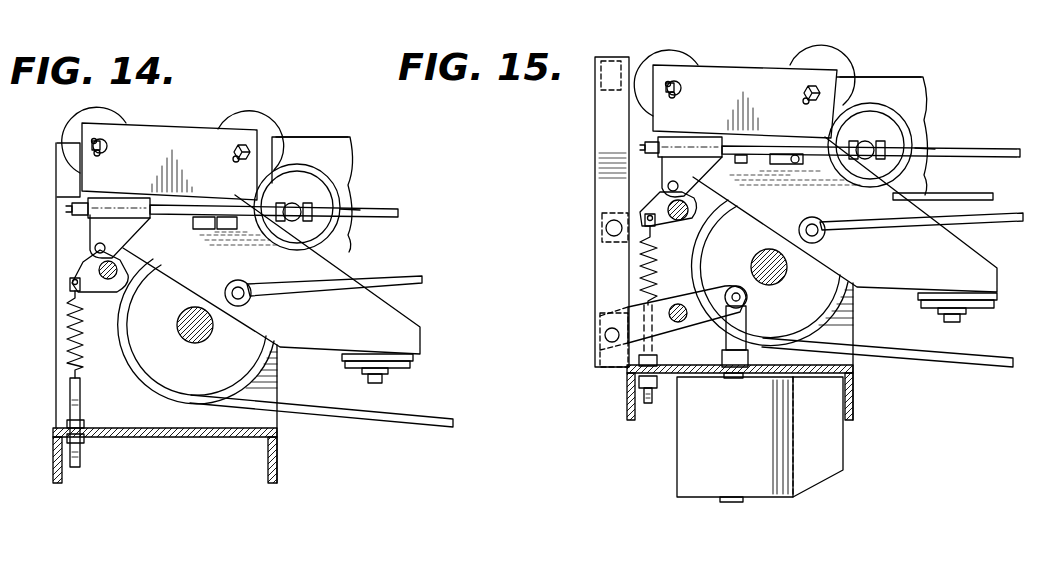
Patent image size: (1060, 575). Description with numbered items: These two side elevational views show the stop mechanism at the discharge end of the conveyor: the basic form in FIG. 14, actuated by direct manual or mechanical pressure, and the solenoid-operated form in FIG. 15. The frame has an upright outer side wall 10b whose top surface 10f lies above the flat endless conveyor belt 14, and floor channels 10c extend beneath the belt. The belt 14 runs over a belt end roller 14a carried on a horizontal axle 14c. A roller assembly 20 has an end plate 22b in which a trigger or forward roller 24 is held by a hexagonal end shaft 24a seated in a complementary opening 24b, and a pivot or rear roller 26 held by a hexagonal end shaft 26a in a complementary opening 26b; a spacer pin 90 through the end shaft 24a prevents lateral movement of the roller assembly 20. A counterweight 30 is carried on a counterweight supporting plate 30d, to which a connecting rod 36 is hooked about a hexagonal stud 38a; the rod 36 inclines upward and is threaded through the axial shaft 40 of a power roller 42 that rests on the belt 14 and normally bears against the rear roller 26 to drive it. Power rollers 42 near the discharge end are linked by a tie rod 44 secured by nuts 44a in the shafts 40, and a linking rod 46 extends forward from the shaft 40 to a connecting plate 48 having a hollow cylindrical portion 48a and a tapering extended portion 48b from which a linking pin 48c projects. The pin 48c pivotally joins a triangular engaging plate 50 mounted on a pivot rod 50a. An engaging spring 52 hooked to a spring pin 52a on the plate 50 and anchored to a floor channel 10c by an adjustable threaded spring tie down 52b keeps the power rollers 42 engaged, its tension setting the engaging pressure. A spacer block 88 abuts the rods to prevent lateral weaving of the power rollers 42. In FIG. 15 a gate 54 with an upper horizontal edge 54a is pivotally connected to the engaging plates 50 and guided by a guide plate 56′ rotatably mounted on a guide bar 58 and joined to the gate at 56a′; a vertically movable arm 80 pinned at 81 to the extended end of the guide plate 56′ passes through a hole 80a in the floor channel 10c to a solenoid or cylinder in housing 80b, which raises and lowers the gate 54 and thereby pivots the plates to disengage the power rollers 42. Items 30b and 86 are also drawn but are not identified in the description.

In FIG. 14, the roller assembly 20 is at (211, 81).
In FIG. 15, the roller assembly 20 is at (784, 19).
In FIG. 14, the outer side wall 10b is at (340, 157).
In FIG. 15, the outer side wall 10b is at (920, 107).
In FIG. 14, the top surface of side wall 10f is at (328, 137).
In FIG. 15, the top surface of side wall 10f is at (925, 78).
In FIG. 14, the floor channel 10c is at (128, 438).
In FIG. 15, the floor channel 10c is at (830, 369).
In FIG. 14, the conveyor belt 14 is at (386, 426).
In FIG. 15, the conveyor belt 14 is at (958, 360).
In FIG. 14, the belt end roller 14a is at (282, 376).
In FIG. 15, the belt end roller 14a is at (856, 312).
In FIG. 14, the horizontal axle 14c is at (194, 343).
In FIG. 15, the horizontal axle 14c is at (786, 271).
In FIG. 14, the end plate 22b is at (184, 125).
In FIG. 15, the end plate 22b is at (765, 65).
In FIG. 14, the trigger or forward roller 24 is at (104, 118).
In FIG. 15, the trigger or forward roller 24 is at (677, 52).
In FIG. 14, the hexagonal end shaft 24a is at (108, 142).
In FIG. 15, the hexagonal end shaft 24a is at (687, 83).
In FIG. 14, the complementary opening 24b is at (98, 156).
In FIG. 15, the complementary opening 24b is at (677, 96).
In FIG. 14, the pivot or rear roller 26 is at (247, 122).
In FIG. 15, the pivot or rear roller 26 is at (817, 62).
In FIG. 14, the hexagonal axial end shaft 26a is at (234, 152).
In FIG. 15, the hexagonal axial end shaft 26a is at (805, 91).
In FIG. 14, the complementary opening 26b is at (236, 162).
In FIG. 15, the complementary opening 26b is at (805, 104).
In FIG. 14, the counterweight 30 is at (411, 360).
In FIG. 15, the counterweight 30 is at (988, 300).
In FIG. 14, the clamp bolt 30b is at (390, 378).
In FIG. 15, the clamp bolt 30b is at (963, 315).
In FIG. 14, the counterweight supporting plate 30d is at (405, 330).
In FIG. 15, the counterweight supporting plate 30d is at (972, 272).
In FIG. 14, the connecting rod 36 is at (404, 283).
In FIG. 15, the connecting rod 36 is at (1000, 223).
In FIG. 14, the hexagonal stud 38a is at (244, 294).
In FIG. 15, the hexagonal stud 38a is at (818, 234).
In FIG. 14, the axial shaft 40 is at (289, 222).
In FIG. 15, the axial shaft 40 is at (860, 142).
In FIG. 14, the power roller 42 is at (308, 178).
In FIG. 15, the power roller 42 is at (863, 117).
In FIG. 14, the tie rod 44 is at (385, 222).
In FIG. 15, the tie rod 44 is at (993, 158).
In FIG. 14, the nut 44a is at (350, 208).
In FIG. 15, the nut 44a is at (927, 146).
In FIG. 14, the linking rod 46 is at (233, 220).
In FIG. 15, the linking rod 46 is at (734, 160).
In FIG. 14, the connecting plate 48 is at (66, 222).
In FIG. 15, the connecting plate 48 is at (660, 168).
In FIG. 14, the hollow cylindrical portion 48a is at (92, 200).
In FIG. 15, the hollow cylindrical portion 48a is at (648, 140).
In FIG. 14, the extended portion 48b is at (118, 230).
In FIG. 15, the extended portion 48b is at (690, 147).
In FIG. 14, the linking pin 48c is at (90, 248).
In FIG. 15, the linking pin 48c is at (673, 186).
In FIG. 14, the engaging plate 50 is at (85, 268).
In FIG. 15, the engaging plate 50 is at (640, 197).
In FIG. 14, the pivot rod 50a is at (120, 262).
In FIG. 15, the pivot rod 50a is at (668, 232).
In FIG. 14, the engaging spring 52 is at (70, 340).
In FIG. 15, the engaging spring 52 is at (640, 270).
In FIG. 14, the spring pin 52a is at (70, 284).
In FIG. 15, the spring pin 52a is at (645, 220).
In FIG. 14, the threaded spring tie down 52b is at (82, 407).
In FIG. 15, the threaded spring tie down 52b is at (648, 354).
In FIG. 15, the gate 54 is at (606, 108).
In FIG. 15, the upper straight horizontal edge 54a is at (620, 56).
In FIG. 15, the guide plate 56′ is at (690, 323).
In FIG. 15, the interconnection of guide plate to gate 56a′ is at (605, 336).
In FIG. 15, the guide bar 58 is at (687, 304).
In FIG. 15, the vertically movable arm 80 is at (748, 348).
In FIG. 15, the hole 80a is at (718, 362).
In FIG. 15, the housing 80b is at (823, 444).
In FIG. 15, the pin 81 is at (748, 297).
In FIG. 14, the roller 86 is at (243, 283).
In FIG. 15, the roller 86 is at (817, 220).
In FIG. 14, the spacer block 88 is at (207, 229).
In FIG. 15, the spacer block 88 is at (800, 160).
In FIG. 14, the spacer pin 90 is at (92, 141).
In FIG. 15, the spacer pin 90 is at (666, 84).